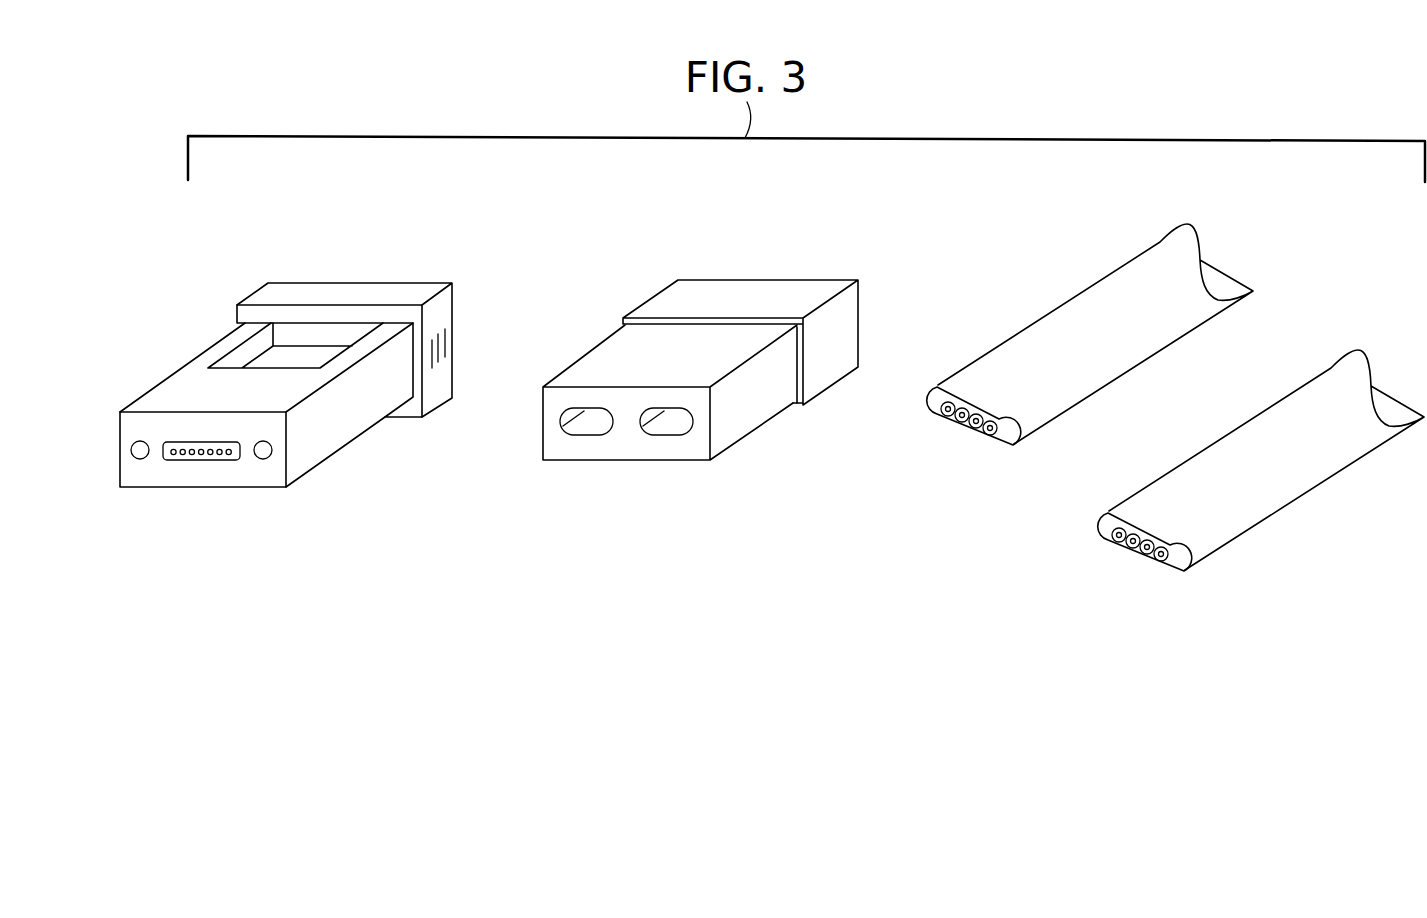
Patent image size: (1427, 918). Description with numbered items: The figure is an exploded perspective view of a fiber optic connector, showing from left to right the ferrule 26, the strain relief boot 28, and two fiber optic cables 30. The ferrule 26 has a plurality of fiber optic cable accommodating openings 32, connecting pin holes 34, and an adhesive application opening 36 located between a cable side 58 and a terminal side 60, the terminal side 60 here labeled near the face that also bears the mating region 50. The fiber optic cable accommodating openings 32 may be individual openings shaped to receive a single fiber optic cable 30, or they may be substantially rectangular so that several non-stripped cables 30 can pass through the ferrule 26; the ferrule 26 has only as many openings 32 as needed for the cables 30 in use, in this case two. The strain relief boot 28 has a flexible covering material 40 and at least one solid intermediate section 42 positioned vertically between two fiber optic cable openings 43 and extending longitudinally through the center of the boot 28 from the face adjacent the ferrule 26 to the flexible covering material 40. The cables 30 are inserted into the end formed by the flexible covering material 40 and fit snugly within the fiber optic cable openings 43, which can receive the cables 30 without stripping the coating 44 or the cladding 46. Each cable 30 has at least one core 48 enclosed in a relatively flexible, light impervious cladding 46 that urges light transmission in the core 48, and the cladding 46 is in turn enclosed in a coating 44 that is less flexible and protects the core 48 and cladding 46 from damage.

The ferrule 26 is at (282, 379).
The strain relief boot 28 is at (700, 373).
The fiber optic cable 30 is at (1151, 425).
The fiber optic cable accommodating opening 32 is at (182, 455).
The connecting pin hole 34 is at (136, 456).
The adhesive application opening 36 is at (254, 341).
The flexible covering material 40 is at (742, 300).
The solid intermediate section 42 is at (625, 423).
The fiber optic cable opening 43 is at (583, 420).
The coating 44 is at (932, 400).
The cladding 46 is at (946, 403).
The core 48 is at (946, 417).
The mating face 50 is at (267, 422).
The cable side 58 is at (347, 292).
The terminal side 60 is at (177, 398).